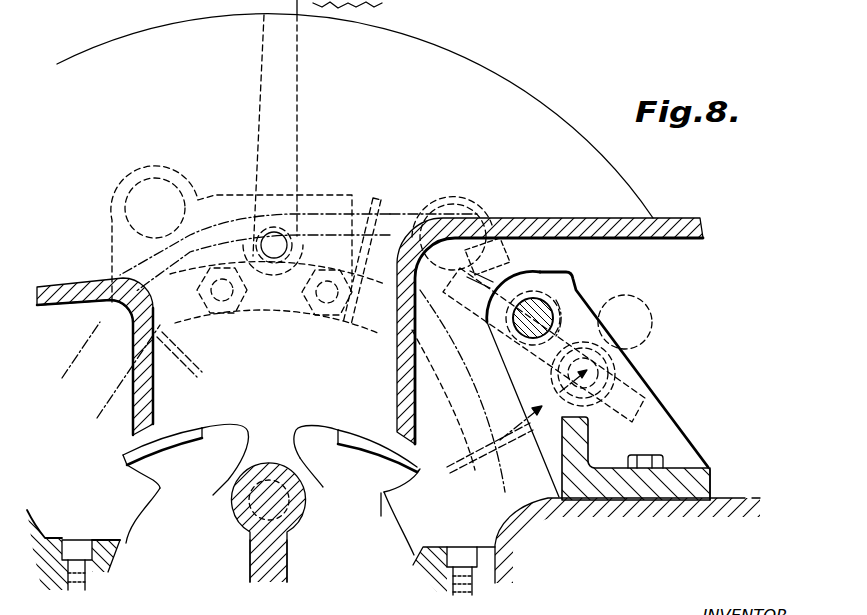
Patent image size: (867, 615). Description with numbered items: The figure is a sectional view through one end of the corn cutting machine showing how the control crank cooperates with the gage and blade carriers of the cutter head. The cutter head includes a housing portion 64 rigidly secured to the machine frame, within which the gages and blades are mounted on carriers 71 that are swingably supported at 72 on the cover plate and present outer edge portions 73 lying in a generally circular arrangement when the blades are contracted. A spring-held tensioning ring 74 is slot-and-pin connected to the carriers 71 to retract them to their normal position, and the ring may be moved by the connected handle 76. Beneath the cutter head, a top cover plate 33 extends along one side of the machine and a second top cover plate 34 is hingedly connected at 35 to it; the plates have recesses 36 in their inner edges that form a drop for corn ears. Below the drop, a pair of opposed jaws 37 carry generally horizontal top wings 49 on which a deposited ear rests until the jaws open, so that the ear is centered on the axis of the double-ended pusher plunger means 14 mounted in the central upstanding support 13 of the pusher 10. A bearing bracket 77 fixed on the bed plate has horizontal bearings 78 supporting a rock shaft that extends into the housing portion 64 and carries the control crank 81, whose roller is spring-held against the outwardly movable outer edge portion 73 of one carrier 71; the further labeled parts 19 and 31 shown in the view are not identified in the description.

The pusher or corn ear advancing means 10 is at (237, 526).
The central upstanding support 13 is at (262, 554).
The double ended pusher plunger means 14 is at (268, 483).
The pivot pin 19 is at (520, 322).
The cover 31 is at (371, 6).
The top cover plate 33 is at (72, 287).
The top cover plate 34 is at (534, 224).
The hinge connection 35 is at (280, 240).
The recesses 36 is at (150, 372).
The opposed jaws 37 is at (207, 470).
The top wings 49 is at (178, 440).
The housing portion 64 is at (142, 31).
The carriers 71 is at (366, 214).
The carrier pivot mounting 72 is at (145, 198).
The outer edge portions 73 is at (238, 192).
The tensioning ring 74 is at (108, 319).
The handle 76 is at (263, 14).
The bearing bracket 77 is at (572, 478).
The horizontal bearings 78 is at (565, 292).
The control crank 81 is at (640, 305).